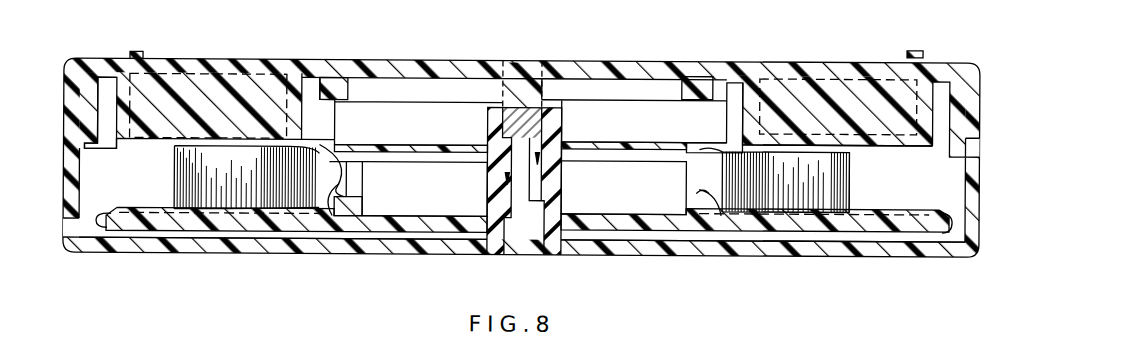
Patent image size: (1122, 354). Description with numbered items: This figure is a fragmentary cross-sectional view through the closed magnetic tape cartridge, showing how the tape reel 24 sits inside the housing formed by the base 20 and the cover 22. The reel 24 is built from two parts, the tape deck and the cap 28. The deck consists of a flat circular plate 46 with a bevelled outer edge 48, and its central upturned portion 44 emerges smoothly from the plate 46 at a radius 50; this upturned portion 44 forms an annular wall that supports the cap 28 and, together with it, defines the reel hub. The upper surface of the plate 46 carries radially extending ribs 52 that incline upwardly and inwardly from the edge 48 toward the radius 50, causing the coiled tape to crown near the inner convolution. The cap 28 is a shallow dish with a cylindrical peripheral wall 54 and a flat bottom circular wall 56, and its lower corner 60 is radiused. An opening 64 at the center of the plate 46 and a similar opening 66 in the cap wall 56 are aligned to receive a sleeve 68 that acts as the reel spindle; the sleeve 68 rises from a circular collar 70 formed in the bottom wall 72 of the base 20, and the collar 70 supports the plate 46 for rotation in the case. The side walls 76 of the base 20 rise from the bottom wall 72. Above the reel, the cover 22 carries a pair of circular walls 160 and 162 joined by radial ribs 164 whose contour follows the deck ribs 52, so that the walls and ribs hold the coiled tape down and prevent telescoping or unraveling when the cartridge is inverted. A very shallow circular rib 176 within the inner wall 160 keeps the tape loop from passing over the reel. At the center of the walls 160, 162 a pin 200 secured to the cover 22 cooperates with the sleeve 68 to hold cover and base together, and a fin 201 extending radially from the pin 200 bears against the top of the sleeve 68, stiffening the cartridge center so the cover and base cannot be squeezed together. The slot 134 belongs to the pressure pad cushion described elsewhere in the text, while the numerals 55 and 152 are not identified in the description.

The base 20 is at (520, 168).
The cover 22 is at (950, 57).
The tape reel 24 is at (780, 192).
The cap 28 is at (607, 125).
The central upturned portion 44 is at (360, 203).
The flat circular plate 46 is at (190, 219).
The bevelled outer edge 48 is at (97, 220).
The radius 50 is at (327, 188).
The radially extending ribs 52 is at (210, 211).
The cylindrical peripheral wall 54 is at (731, 96).
The spacer 55 is at (383, 163).
The flat bottom circular wall 56 is at (465, 141).
The lower corner 60 is at (330, 145).
The opening 64 is at (480, 173).
The opening 66 is at (502, 60).
The sleeve 68 is at (562, 113).
The circular collar 70 is at (575, 234).
The bottom wall 72 is at (813, 246).
The side walls 76 is at (64, 225).
The slot 134 is at (250, 179).
The annular rib 152 is at (100, 118).
The inner circular wall 160 is at (783, 93).
The outer circular wall 162 is at (905, 90).
The radial ribs 164 is at (848, 90).
The shallow circular rib 176 is at (347, 88).
The pin 200 is at (522, 147).
The fin 201 is at (503, 56).